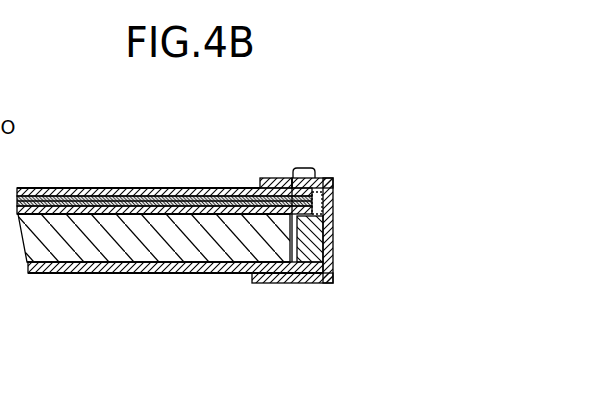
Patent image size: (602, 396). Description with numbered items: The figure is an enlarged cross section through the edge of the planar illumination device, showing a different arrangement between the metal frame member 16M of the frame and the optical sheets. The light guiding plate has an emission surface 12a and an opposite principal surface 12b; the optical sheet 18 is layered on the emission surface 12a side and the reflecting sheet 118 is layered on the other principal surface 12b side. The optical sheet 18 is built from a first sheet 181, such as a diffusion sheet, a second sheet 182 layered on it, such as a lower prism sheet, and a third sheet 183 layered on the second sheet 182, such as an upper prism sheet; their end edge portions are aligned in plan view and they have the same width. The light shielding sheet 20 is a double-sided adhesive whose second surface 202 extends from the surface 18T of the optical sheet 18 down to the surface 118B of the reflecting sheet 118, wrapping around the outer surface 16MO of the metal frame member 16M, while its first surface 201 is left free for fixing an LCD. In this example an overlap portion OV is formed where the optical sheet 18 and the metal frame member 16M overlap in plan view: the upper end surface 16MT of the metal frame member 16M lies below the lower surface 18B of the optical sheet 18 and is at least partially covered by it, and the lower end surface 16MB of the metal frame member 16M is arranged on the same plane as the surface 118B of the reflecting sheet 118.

The optical sheet 18 is at (197, 153).
The first sheet 181 is at (62, 187).
The second sheet 182 is at (122, 187).
The third sheet 183 is at (170, 187).
The surface of the optical sheet 18T is at (213, 187).
The lower surface of the optical sheet 18B is at (166, 273).
The light shielding sheet 20 is at (42, 247).
The emission surface 12a is at (20, 187).
The other principal surface 12b is at (78, 271).
The reflecting sheet 118 is at (133, 273).
The surface of the reflecting sheet 118B is at (223, 273).
The first surface 201 is at (270, 178).
The second surface 202 is at (248, 187).
The overlap portion OV is at (307, 168).
The upper end surface of the metal frame member 16MT is at (333, 188).
The outer surface of the metal frame member 16MO is at (333, 252).
The lower end surface of the metal frame member 16MB is at (323, 283).
The metal frame member 16M is at (303, 250).